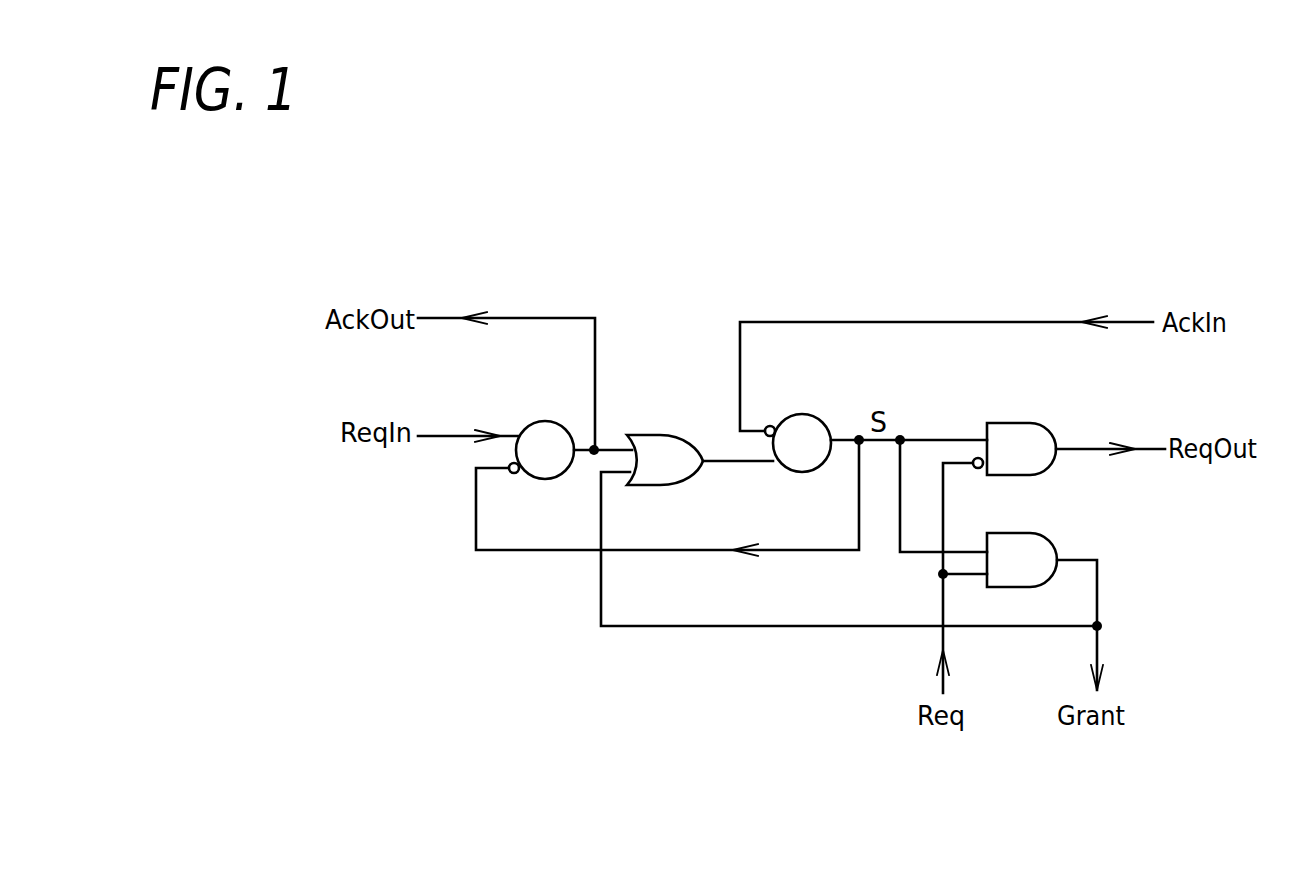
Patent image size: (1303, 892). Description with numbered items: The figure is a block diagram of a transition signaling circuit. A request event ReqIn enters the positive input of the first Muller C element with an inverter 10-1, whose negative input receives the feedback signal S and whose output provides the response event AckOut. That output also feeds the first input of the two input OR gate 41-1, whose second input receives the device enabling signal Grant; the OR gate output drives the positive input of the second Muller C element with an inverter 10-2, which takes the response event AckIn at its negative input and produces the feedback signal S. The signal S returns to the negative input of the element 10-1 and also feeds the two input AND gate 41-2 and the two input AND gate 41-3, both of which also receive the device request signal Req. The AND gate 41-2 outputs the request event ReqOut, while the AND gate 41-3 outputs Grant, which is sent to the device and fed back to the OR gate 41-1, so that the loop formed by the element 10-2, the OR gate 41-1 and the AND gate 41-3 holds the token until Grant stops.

The first Muller C element with an inverter 10-1 is at (548, 421).
The second Muller C element with an inverter 10-2 is at (822, 420).
The first gate circuit (two input OR gate) 41-1 is at (645, 432).
The second gate circuit (two input AND gate) 41-2 is at (1056, 436).
The third gate circuit (two input AND gate) 41-3 is at (1056, 541).